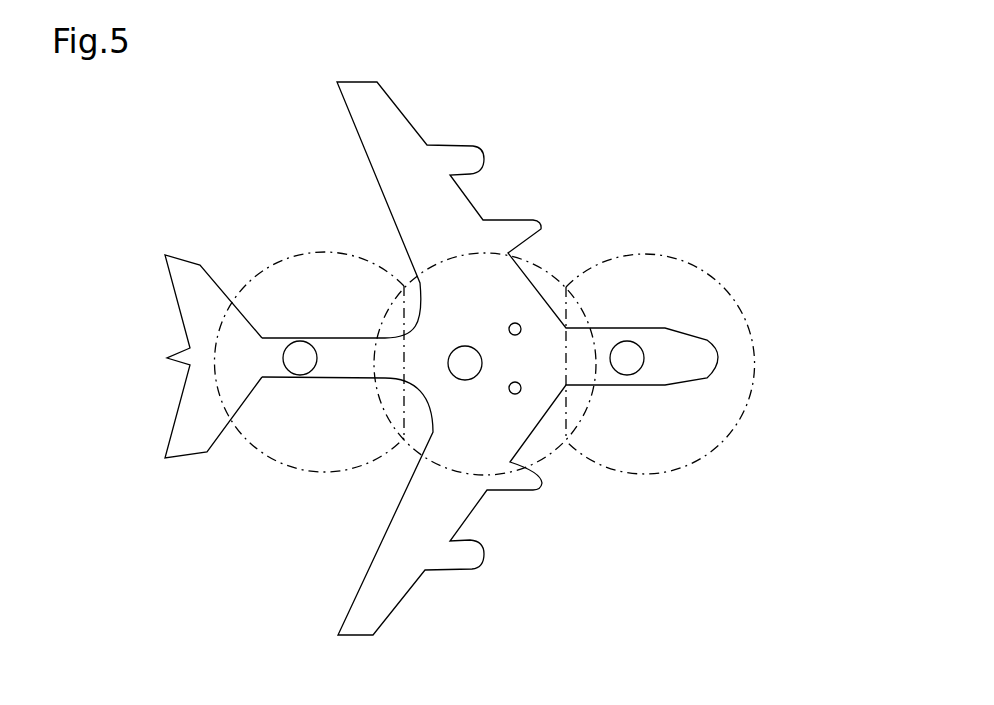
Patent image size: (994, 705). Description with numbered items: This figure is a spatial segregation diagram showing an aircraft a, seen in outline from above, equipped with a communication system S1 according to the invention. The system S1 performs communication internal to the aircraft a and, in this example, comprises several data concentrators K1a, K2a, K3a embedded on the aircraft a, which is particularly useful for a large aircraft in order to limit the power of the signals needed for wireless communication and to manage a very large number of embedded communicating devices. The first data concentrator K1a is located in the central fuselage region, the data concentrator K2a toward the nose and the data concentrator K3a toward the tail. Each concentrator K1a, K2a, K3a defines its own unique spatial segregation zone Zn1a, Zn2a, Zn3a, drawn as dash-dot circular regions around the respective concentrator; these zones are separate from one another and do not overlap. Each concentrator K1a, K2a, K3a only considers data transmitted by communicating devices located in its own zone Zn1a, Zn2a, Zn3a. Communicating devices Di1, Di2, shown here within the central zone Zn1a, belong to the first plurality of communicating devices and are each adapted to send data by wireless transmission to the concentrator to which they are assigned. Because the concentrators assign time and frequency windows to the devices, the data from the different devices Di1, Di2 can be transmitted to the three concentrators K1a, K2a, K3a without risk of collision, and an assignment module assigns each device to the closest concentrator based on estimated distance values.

The communication system S1 is at (411, 358).
The aircraft a is at (193, 385).
The first data concentrator K1a is at (452, 373).
The data concentrator K2a is at (628, 341).
The data concentrator K3a is at (283, 357).
The communicating device Di1 is at (519, 393).
The communicating device Di2 is at (517, 323).
The spatial segregation zone Zn1a is at (508, 483).
The spatial segregation zone Zn2a is at (692, 473).
The spatial segregation zone Zn3a is at (258, 463).